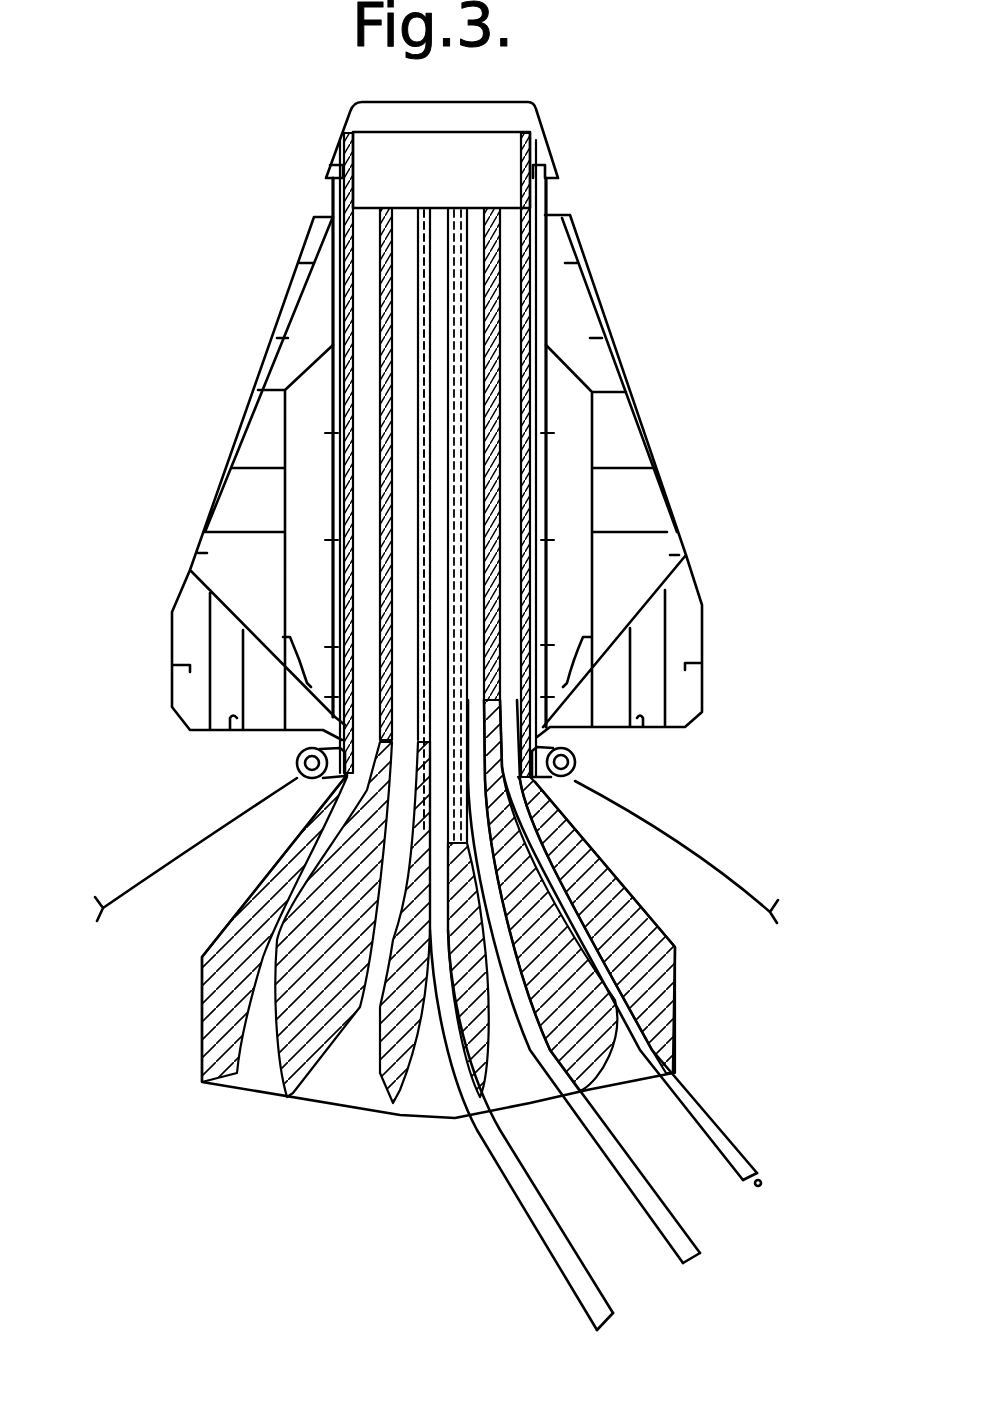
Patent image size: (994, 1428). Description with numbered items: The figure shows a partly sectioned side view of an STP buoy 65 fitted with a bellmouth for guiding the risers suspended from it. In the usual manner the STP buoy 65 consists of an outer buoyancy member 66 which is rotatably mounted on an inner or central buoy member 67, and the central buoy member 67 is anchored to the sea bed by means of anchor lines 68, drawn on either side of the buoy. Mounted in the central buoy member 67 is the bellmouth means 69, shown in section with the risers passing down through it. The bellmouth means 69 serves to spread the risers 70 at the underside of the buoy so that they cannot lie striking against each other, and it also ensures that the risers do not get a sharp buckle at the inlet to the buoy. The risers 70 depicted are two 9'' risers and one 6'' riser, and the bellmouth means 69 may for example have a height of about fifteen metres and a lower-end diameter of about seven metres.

The STP buoy 65 is at (652, 454).
The outer buoyancy member 66 is at (635, 507).
The central buoy member 67 is at (347, 458).
The anchor lines 68 is at (177, 868).
The bellmouth means 69 is at (203, 1016).
The risers 70 is at (613, 1313).
The 6" riser 6'' is at (628, 940).
The 9" risers 9'' is at (565, 1015).